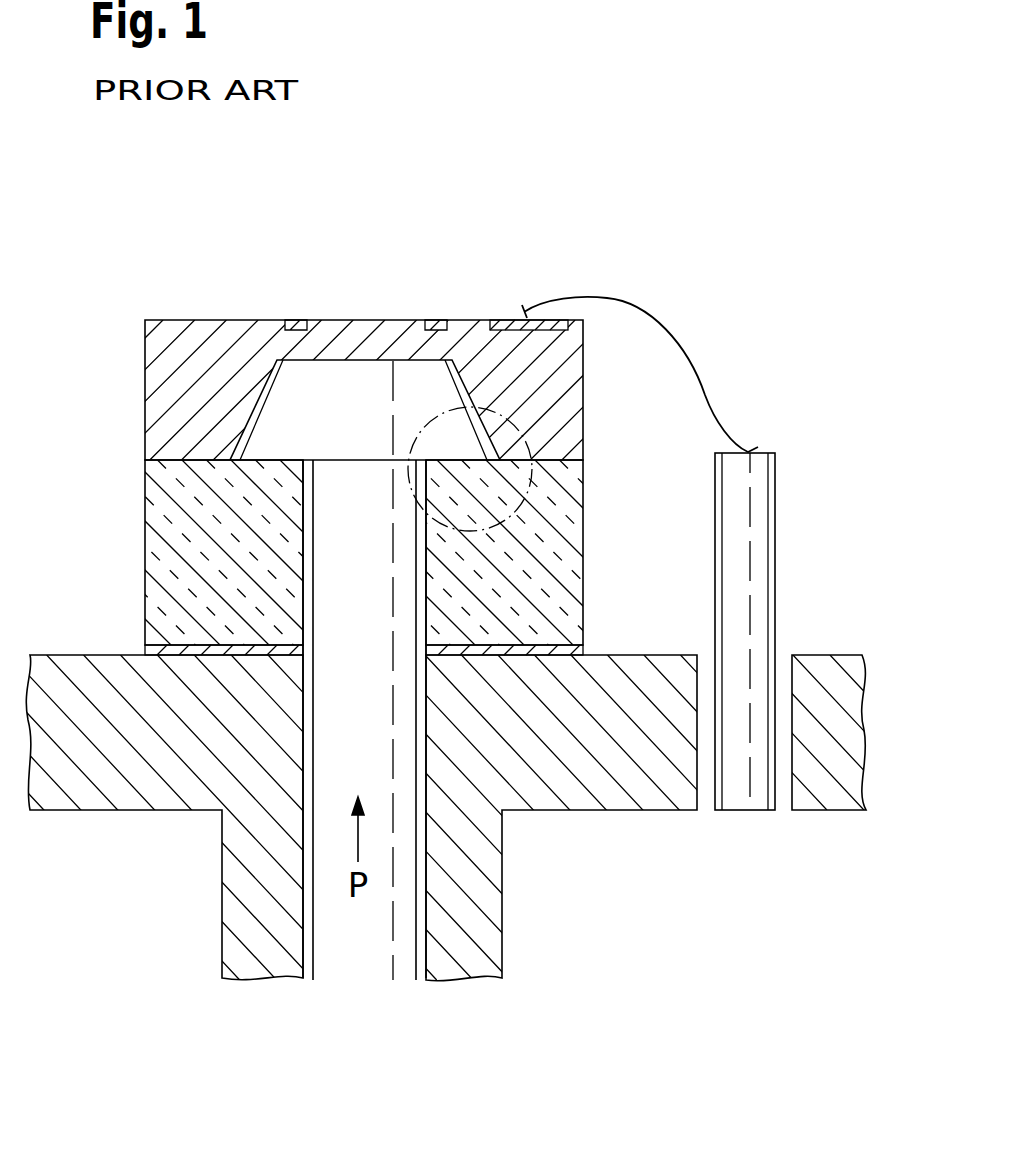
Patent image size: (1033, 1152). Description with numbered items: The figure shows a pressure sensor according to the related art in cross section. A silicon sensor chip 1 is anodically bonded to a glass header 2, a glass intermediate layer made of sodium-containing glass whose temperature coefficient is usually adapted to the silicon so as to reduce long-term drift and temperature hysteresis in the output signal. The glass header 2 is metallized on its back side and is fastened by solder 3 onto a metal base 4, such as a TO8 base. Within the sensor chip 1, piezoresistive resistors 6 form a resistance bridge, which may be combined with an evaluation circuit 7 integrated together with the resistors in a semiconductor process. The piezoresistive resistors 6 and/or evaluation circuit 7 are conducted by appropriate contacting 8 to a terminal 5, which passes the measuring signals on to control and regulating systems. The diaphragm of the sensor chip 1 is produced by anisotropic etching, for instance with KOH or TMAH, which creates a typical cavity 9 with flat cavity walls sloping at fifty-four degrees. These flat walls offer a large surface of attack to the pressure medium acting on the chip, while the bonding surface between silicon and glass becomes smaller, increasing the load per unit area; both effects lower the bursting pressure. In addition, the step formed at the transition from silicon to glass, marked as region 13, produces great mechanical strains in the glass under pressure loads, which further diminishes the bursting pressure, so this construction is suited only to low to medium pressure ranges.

The sensor chip 1 is at (212, 332).
The glass header 2 is at (167, 531).
The solder 3 is at (153, 653).
The metal base 4 is at (125, 796).
The terminal 5 is at (760, 512).
The piezoresistive resistors 6 is at (297, 318).
The evaluation circuit 7 is at (505, 318).
The contacting 8 is at (645, 303).
The cavity 9 is at (357, 384).
The region 13 is at (530, 440).